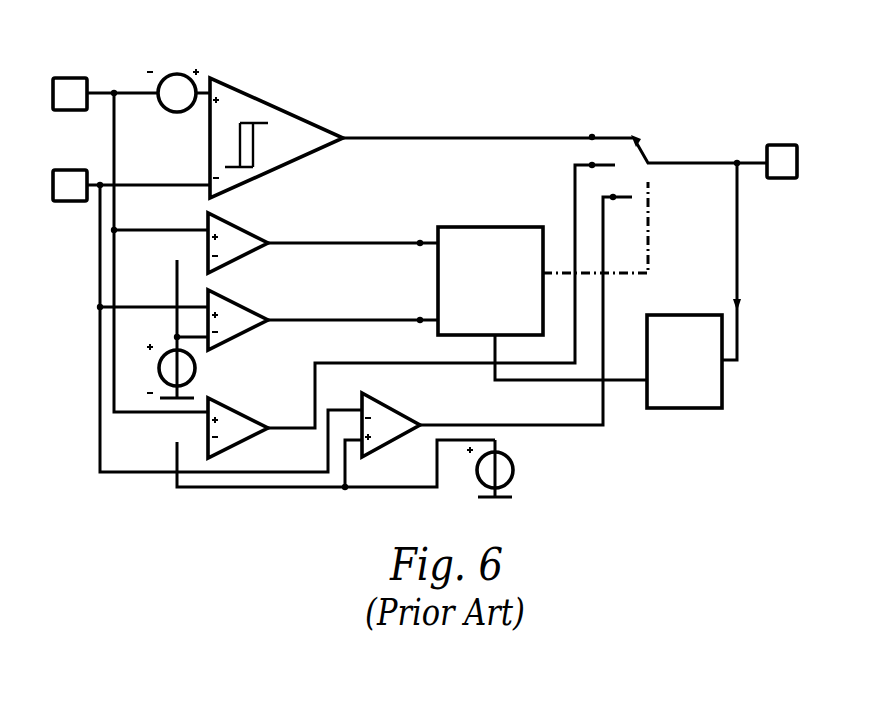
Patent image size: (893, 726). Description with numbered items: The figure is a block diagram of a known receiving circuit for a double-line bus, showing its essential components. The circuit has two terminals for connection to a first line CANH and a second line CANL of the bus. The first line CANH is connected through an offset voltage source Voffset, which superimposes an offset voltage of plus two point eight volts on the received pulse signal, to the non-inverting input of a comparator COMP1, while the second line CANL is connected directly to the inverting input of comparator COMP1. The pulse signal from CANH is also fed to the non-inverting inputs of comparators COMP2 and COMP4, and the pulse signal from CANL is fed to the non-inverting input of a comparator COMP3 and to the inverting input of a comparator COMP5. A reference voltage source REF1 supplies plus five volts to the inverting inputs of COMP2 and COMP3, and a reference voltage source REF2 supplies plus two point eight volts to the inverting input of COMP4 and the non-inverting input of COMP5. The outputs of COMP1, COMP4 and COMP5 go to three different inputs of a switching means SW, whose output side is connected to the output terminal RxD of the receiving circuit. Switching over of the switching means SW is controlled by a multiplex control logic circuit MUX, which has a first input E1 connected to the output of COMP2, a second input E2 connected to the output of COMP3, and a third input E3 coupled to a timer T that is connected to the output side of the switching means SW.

The first line CANH is at (76, 76).
The second line CANL is at (76, 170).
The offset voltage source Voffset is at (195, 85).
The comparator COMP1 is at (421, 134).
The comparator COMP2 is at (266, 240).
The comparator COMP3 is at (266, 317).
The comparator COMP4 is at (411, 310).
The comparator COMP5 is at (497, 325).
The reference voltage source REF1 is at (192, 357).
The reference voltage source REF2 is at (520, 463).
The first input E1 is at (353, 227).
The second input E2 is at (353, 303).
The third input E3 is at (571, 357).
The multiplex control logic circuit MUX is at (543, 258).
The switching means SW is at (699, 171).
The timer T is at (694, 285).
The output terminal RxD is at (776, 180).